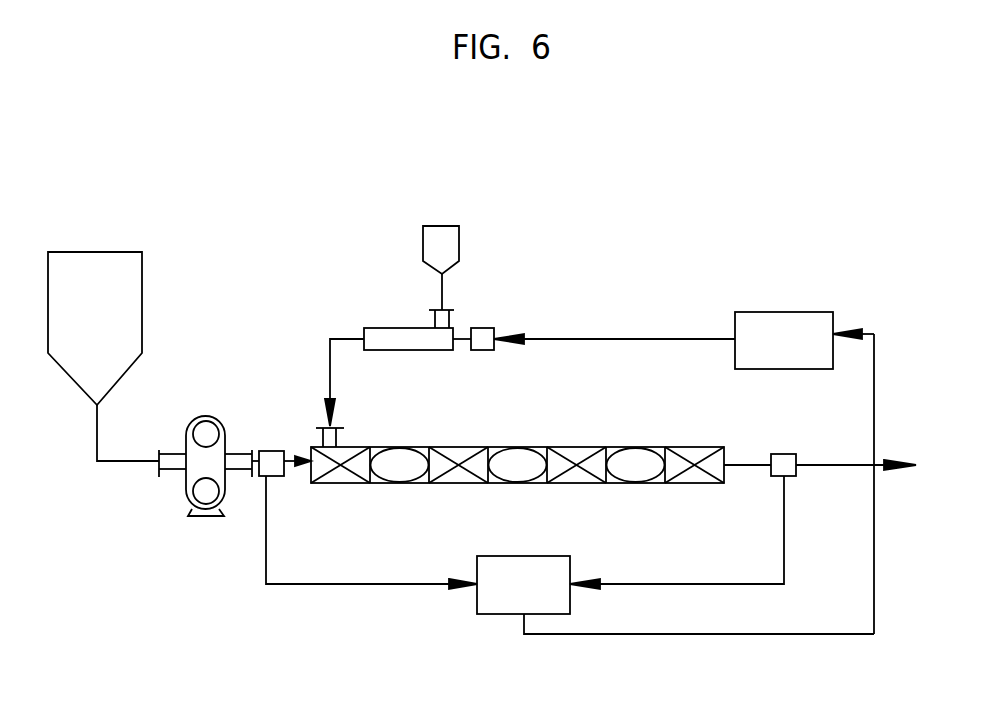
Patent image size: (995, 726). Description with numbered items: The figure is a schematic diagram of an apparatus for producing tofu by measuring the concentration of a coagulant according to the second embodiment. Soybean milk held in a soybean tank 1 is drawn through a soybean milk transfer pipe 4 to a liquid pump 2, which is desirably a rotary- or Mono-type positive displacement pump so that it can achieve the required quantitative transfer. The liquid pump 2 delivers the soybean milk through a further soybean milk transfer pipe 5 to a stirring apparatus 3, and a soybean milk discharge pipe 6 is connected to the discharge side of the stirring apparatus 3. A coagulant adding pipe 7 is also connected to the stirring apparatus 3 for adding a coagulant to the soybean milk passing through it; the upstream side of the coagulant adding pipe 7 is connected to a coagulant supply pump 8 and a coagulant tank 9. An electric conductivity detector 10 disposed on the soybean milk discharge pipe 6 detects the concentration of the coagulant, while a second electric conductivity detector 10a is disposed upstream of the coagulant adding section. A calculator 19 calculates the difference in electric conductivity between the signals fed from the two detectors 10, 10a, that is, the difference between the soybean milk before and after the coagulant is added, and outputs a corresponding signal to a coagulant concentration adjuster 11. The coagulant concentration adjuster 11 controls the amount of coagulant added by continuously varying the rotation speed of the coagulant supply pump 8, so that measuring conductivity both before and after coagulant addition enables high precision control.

The soybean tank 1 is at (134, 294).
The liquid pump 2 is at (194, 509).
The stirring apparatus 3 is at (564, 438).
The soybean milk transfer pipe 4 is at (111, 455).
The soybean milk transfer pipe 5 is at (279, 448).
The soybean milk discharge pipe 6 is at (871, 455).
The coagulant adding pipe 7 is at (319, 356).
The coagulant supply pump 8 is at (391, 318).
The coagulant tank 9 is at (451, 236).
The electric conductivity detector 10 is at (775, 445).
The electric conductivity detector 10a is at (258, 463).
The coagulant concentration adjuster 11 is at (775, 298).
The calculator 19 is at (484, 606).